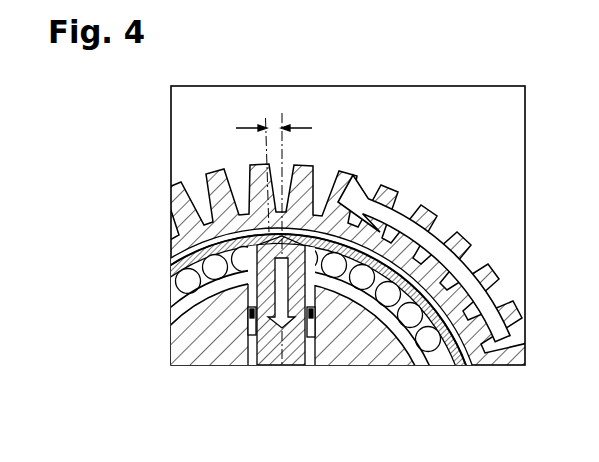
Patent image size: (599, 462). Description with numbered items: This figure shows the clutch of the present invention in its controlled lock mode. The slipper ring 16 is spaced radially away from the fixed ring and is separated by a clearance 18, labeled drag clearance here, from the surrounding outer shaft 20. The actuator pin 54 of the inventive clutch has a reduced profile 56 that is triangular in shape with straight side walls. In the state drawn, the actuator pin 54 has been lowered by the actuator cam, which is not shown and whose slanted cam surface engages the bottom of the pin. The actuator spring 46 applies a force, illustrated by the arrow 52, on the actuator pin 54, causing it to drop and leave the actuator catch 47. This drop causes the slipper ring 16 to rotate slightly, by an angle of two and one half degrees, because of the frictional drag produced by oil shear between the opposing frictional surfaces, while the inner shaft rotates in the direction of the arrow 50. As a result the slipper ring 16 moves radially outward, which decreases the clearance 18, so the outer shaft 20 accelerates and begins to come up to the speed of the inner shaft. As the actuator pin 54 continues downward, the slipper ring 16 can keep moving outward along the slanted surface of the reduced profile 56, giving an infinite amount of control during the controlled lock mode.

The slipper ring 16 is at (480, 347).
The clearance 18 is at (326, 229).
The outer shaft 20 is at (480, 357).
The actuator spring 46 is at (248, 311).
The actuator catch 47 is at (192, 242).
The arrow 50 is at (475, 253).
The arrow 52 is at (283, 330).
The actuator pin 54 is at (314, 330).
The reduced profile 56 is at (261, 228).